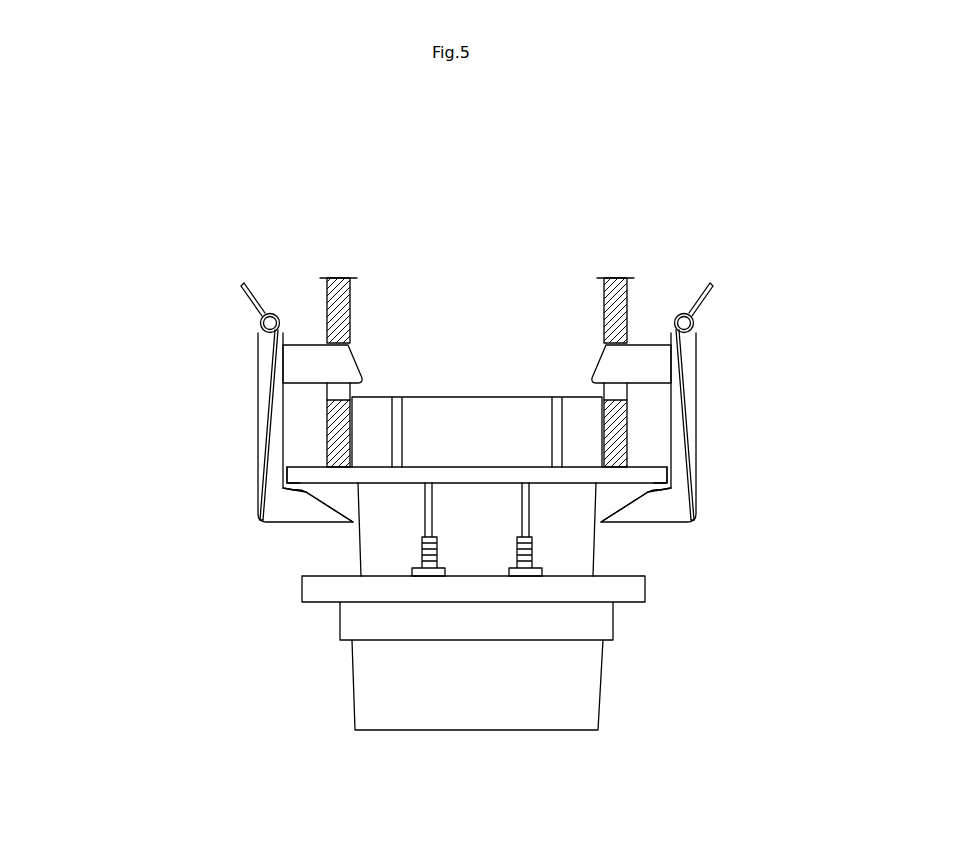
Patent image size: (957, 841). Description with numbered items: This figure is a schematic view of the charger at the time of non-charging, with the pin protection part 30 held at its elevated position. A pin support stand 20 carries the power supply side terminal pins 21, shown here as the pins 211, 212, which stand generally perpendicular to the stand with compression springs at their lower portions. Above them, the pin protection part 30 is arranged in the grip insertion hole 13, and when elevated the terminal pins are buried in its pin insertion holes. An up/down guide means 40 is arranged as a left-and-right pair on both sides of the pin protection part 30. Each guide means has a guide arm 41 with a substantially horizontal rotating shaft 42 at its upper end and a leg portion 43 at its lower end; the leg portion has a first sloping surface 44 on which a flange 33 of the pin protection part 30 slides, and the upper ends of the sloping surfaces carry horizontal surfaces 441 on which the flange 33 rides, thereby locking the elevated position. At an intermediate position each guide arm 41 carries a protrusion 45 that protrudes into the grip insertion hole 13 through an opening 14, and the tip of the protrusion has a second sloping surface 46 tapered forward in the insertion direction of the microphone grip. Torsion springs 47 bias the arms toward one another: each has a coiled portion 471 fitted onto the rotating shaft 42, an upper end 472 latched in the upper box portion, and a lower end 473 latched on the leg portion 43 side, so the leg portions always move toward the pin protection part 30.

The grip insertion hole 13 is at (604, 288).
The opening 14 is at (352, 346).
The pin support stand 20 is at (637, 710).
The power supply side terminal pin 21 is at (477, 573).
The power supply side terminal pin 211 is at (420, 518).
The power supply side terminal pin 212 is at (532, 522).
The pin protection part 30 is at (630, 448).
The flange 33 is at (286, 471).
The up/down guide means 40 is at (448, 398).
The guide arm 41 is at (258, 393).
The rotating shaft 42 is at (493, 260).
The leg portion 43 is at (275, 527).
The sloping surface 44 is at (487, 519).
The protrusion 45 is at (519, 296).
The sloping surface 46 is at (352, 357).
The torsion spring 47 is at (493, 398).
The horizontal surface 441 is at (790, 521).
The coiled portion 471 is at (260, 323).
The upper end 472 is at (250, 297).
The lower end 473 is at (262, 523).